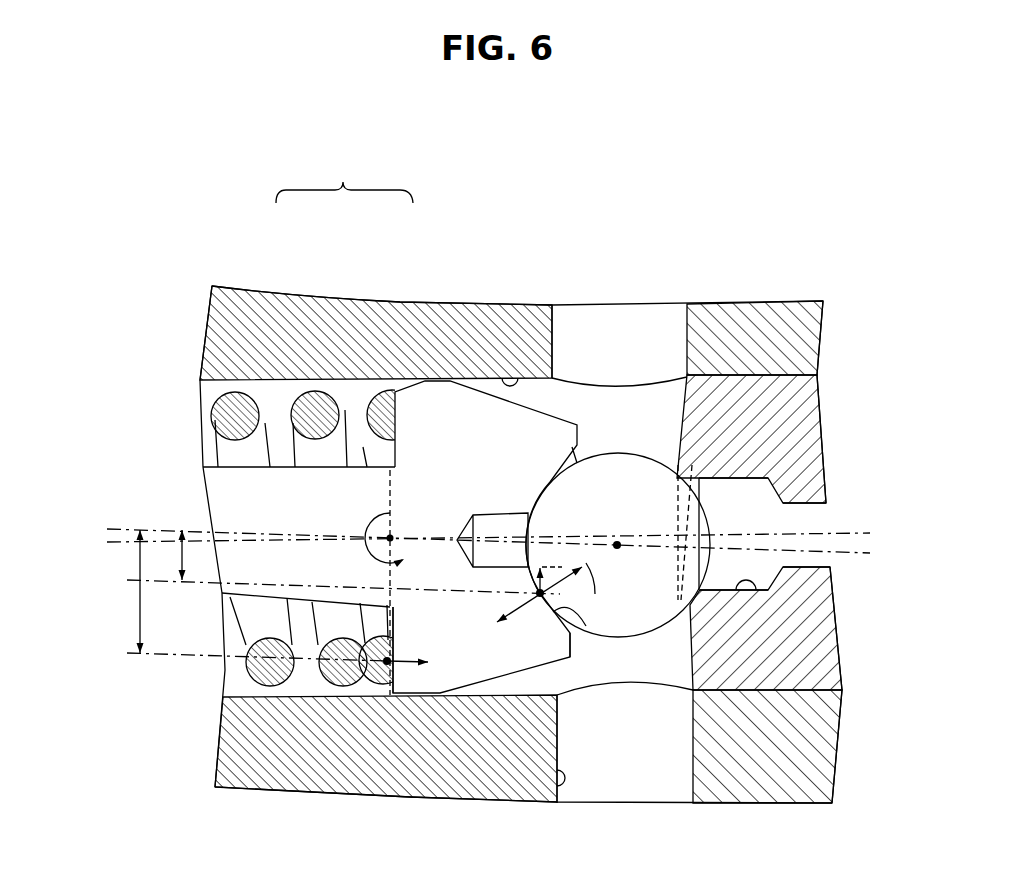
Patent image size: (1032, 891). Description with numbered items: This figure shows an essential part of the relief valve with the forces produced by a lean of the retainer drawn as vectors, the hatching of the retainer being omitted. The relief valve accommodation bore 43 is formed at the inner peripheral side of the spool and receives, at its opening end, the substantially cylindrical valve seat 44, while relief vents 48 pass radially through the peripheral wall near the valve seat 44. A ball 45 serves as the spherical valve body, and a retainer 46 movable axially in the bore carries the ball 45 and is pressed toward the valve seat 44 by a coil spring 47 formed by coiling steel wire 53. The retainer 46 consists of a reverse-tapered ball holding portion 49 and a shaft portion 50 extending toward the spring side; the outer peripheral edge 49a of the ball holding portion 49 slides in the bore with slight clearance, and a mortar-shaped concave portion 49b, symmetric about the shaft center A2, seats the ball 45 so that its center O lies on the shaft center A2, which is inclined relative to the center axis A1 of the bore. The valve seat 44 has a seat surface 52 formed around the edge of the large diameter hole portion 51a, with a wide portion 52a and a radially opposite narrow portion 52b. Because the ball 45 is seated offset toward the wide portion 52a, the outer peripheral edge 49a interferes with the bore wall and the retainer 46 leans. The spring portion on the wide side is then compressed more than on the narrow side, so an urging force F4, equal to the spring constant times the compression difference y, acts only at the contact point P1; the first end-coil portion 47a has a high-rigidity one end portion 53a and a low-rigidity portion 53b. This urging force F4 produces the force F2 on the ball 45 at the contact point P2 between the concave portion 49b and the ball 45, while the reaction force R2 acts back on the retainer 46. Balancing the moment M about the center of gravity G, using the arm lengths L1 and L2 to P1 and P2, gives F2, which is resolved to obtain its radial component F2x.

The relief valve accommodation bore 43 is at (532, 305).
The valve seat 44 is at (778, 390).
The ball 45 is at (655, 602).
The retainer 46 is at (343, 182).
The coil spring 47 is at (268, 674).
The first end-coil portion 47a is at (342, 690).
The relief vents 48 is at (577, 305).
The ball holding portion 49 is at (422, 413).
The outer peripheral edge 49a is at (414, 697).
The concave portion 49b is at (586, 626).
The shaft portion 50 is at (298, 488).
The large diameter hole portion 51a is at (768, 592).
The seat surface 52 is at (748, 460).
The wide portion 52a is at (705, 594).
The narrow portion 52b is at (698, 478).
The steel wire 53 is at (238, 412).
The one end portion 53a is at (375, 688).
The portion 53b is at (372, 426).
The center of gravity G is at (398, 515).
The moment M is at (377, 542).
The center O is at (628, 556).
The center axis A1 is at (835, 533).
The shaft center A2 is at (836, 554).
The arm length L1 is at (138, 612).
The arm length L2 is at (182, 552).
The contact point P1 is at (387, 666).
The contact point P2 is at (540, 600).
The force F2 is at (600, 598).
The radial direction component F2x is at (546, 565).
The urging force F4 is at (429, 667).
The reaction force R2 is at (528, 598).
The difference in compression amount y is at (393, 700).